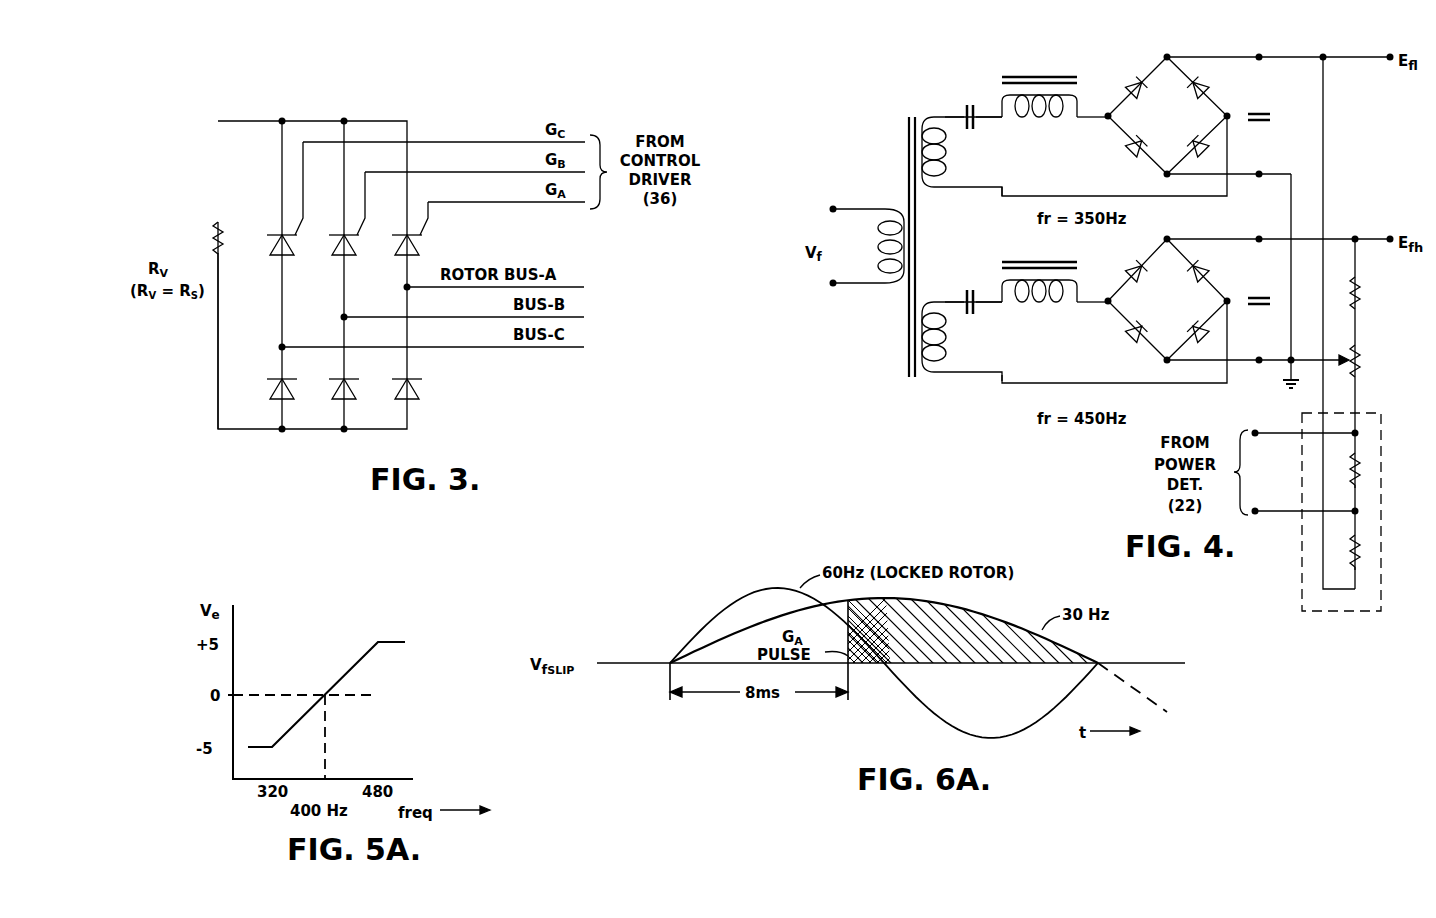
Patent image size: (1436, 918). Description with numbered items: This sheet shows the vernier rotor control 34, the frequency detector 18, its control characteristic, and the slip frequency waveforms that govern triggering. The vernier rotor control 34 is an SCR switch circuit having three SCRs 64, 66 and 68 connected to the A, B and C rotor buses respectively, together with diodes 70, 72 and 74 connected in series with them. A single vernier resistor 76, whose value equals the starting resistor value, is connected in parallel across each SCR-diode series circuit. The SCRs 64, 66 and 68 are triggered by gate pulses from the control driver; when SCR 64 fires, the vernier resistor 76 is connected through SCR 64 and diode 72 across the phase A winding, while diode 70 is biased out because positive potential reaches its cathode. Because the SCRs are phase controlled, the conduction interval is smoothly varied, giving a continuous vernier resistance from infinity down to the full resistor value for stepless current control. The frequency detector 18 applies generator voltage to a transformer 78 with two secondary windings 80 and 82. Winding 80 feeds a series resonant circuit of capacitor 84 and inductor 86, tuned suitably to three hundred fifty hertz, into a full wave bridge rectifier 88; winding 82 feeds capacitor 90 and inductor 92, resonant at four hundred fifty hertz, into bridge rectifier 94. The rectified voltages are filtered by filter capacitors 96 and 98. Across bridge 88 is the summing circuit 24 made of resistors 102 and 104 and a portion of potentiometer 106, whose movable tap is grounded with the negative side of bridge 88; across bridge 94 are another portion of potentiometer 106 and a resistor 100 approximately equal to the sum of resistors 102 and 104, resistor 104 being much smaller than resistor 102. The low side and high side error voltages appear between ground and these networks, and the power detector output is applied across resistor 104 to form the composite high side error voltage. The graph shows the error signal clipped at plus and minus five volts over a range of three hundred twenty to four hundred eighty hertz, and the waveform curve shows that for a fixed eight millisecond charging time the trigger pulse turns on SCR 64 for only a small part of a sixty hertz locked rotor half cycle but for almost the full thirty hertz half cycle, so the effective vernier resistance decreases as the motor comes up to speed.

In FIG. 3, the vernier rotor control 34 is at (333, 96).
In FIG. 3, the vernier resistor 76 is at (216, 240).
In FIG. 3, the SCR 68 is at (277, 260).
In FIG. 3, the SCR 66 is at (339, 260).
In FIG. 3, the SCR 64 is at (402, 260).
In FIG. 3, the diode 74 is at (277, 402).
In FIG. 3, the diode 72 is at (339, 402).
In FIG. 3, the diode 70 is at (402, 402).
In FIG. 4, the frequency detector 18 is at (1122, 36).
In FIG. 4, the transformer 78 is at (913, 390).
In FIG. 4, the secondary winding 80 is at (947, 153).
In FIG. 4, the secondary winding 82 is at (947, 338).
In FIG. 4, the capacitor 84 is at (967, 106).
In FIG. 4, the capacitor 90 is at (967, 290).
In FIG. 4, the inductor 86 is at (1056, 115).
In FIG. 4, the inductor 92 is at (1056, 300).
In FIG. 4, the full wave bridge rectifier 88 is at (1182, 128).
In FIG. 4, the bridge rectifier 94 is at (1182, 312).
In FIG. 4, the filter capacitor 96 is at (1272, 118).
In FIG. 4, the filter capacitor 98 is at (1255, 299).
In FIG. 4, the resistor 100 is at (1362, 293).
In FIG. 4, the potentiometer 106 is at (1362, 360).
In FIG. 4, the resistor 104 is at (1363, 477).
In FIG. 4, the resistor 102 is at (1363, 549).
In FIG. 4, the summing circuit 24 is at (1302, 574).